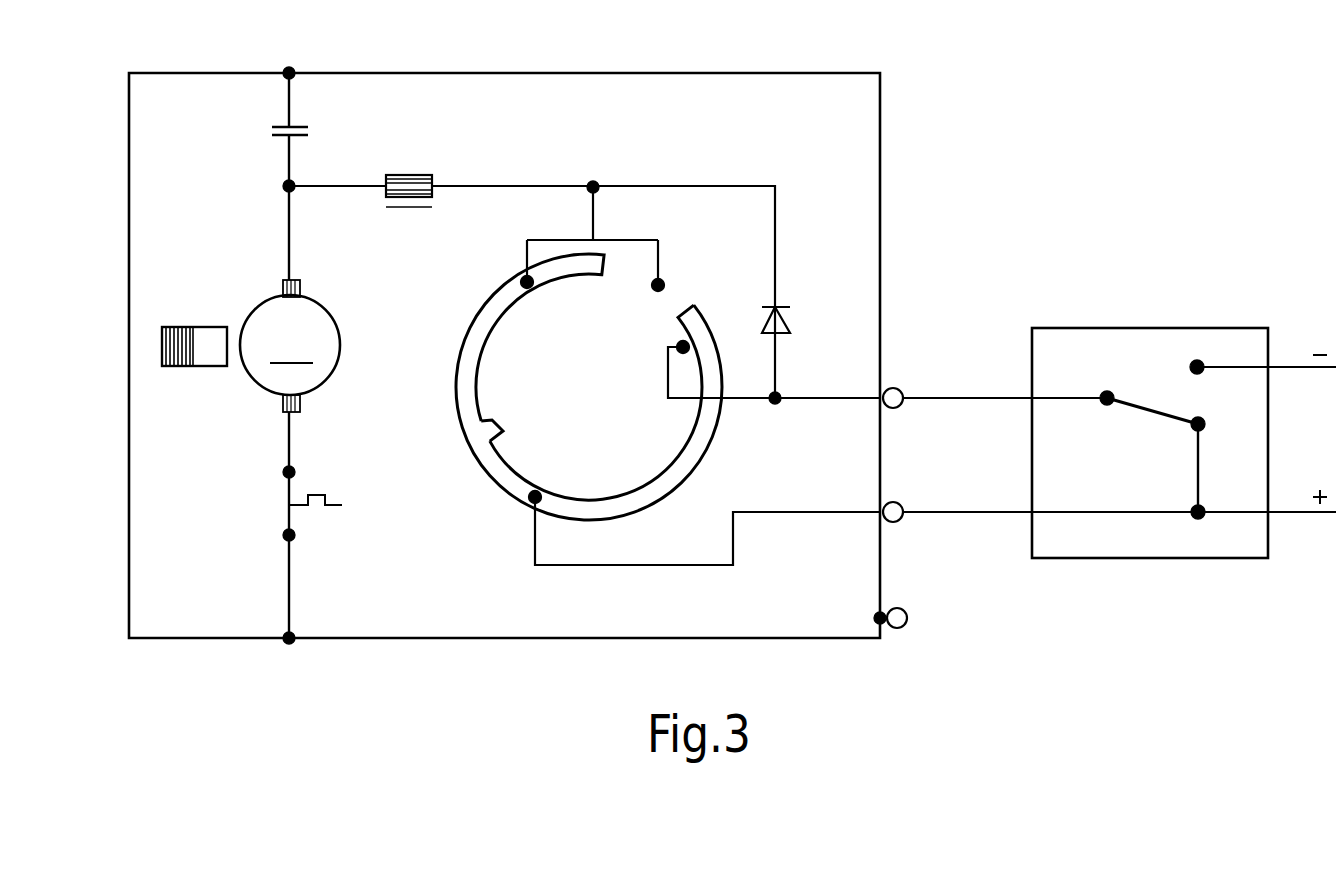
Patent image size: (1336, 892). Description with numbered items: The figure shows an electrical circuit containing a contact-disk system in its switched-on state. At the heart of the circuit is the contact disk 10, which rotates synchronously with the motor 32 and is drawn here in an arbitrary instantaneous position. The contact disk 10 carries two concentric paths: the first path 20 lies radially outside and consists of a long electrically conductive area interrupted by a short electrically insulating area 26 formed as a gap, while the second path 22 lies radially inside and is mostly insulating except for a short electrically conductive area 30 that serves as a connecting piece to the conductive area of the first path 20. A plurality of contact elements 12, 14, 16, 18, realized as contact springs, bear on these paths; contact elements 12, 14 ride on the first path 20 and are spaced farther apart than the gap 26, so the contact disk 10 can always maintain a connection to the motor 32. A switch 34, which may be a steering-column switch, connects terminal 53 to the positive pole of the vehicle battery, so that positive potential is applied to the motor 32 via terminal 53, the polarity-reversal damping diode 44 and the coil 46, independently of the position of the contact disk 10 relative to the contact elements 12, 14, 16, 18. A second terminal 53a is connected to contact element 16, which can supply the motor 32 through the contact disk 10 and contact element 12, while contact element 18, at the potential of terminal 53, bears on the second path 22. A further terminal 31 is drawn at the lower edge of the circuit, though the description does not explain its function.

The contact disk 10 is at (614, 400).
The contact element 12 is at (667, 278).
The contact element 14 is at (524, 280).
The contact element 16 is at (533, 500).
The contact element 18 is at (683, 347).
The first path 20 is at (640, 385).
The second path 22 is at (513, 460).
The electrically insulating area 26 is at (677, 298).
The electrically conductive area 30 is at (492, 420).
The ground terminal 31 is at (914, 620).
The motor 32 is at (262, 388).
The switch 34 is at (1140, 390).
The polarity-reversal damping diode 44 is at (792, 320).
The coil 46 is at (408, 176).
The terminal 53 is at (995, 388).
The terminal 53a is at (1109, 501).